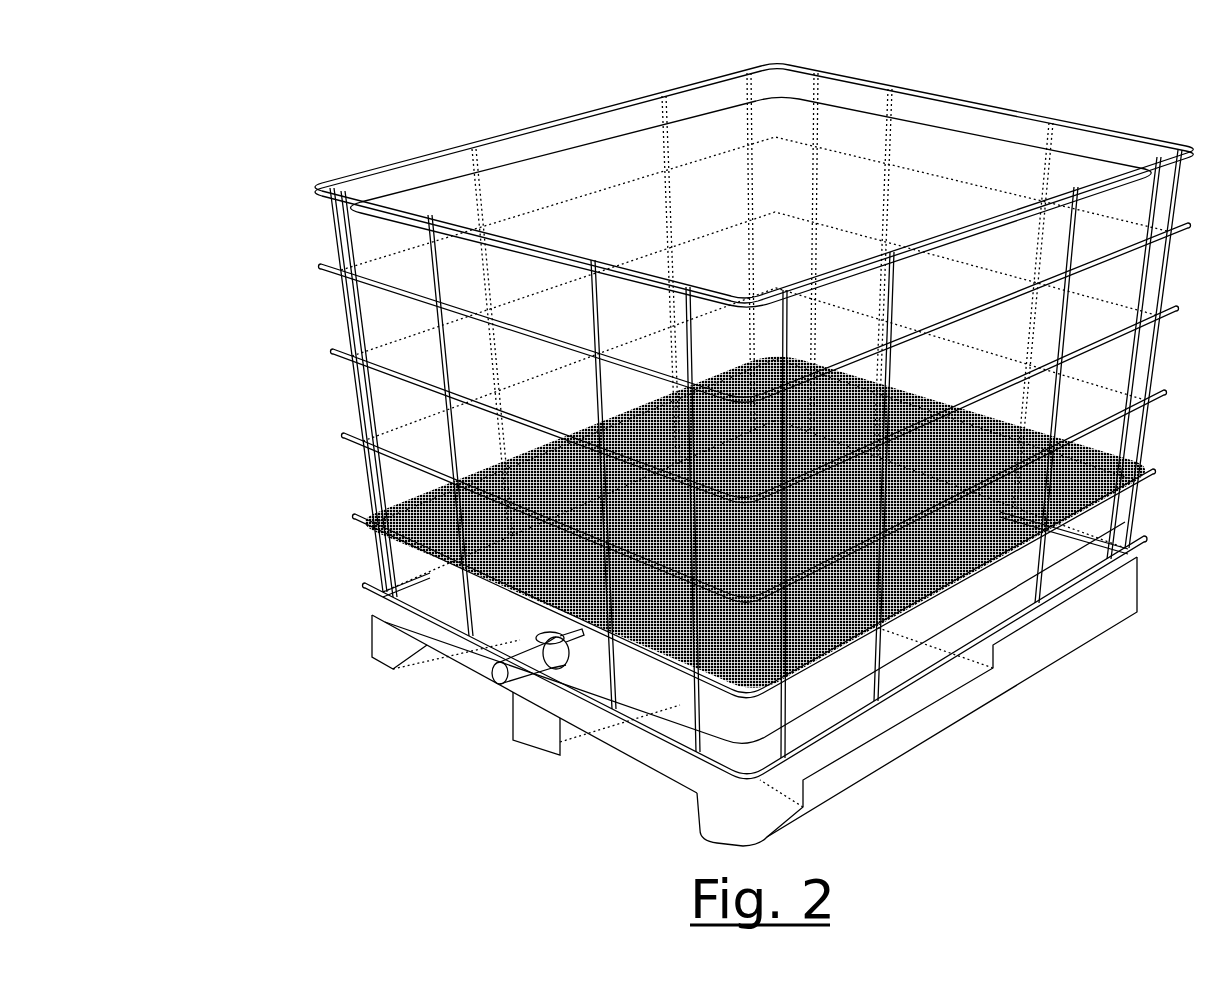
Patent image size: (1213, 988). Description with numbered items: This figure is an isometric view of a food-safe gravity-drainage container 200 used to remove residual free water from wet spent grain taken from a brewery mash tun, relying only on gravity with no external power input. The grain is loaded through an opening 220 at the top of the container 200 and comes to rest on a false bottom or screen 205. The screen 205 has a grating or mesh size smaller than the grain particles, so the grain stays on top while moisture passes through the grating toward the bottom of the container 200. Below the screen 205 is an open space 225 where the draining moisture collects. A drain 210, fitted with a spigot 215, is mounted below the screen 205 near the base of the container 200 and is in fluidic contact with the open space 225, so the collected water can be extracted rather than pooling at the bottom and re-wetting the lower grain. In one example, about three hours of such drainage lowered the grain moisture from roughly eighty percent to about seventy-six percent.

The gravity-drainage container 200 is at (1038, 62).
The screen 205 is at (350, 520).
The drain 210 is at (493, 675).
The spigot 215 is at (572, 645).
The opening 220 is at (553, 98).
The open space 225 is at (968, 695).